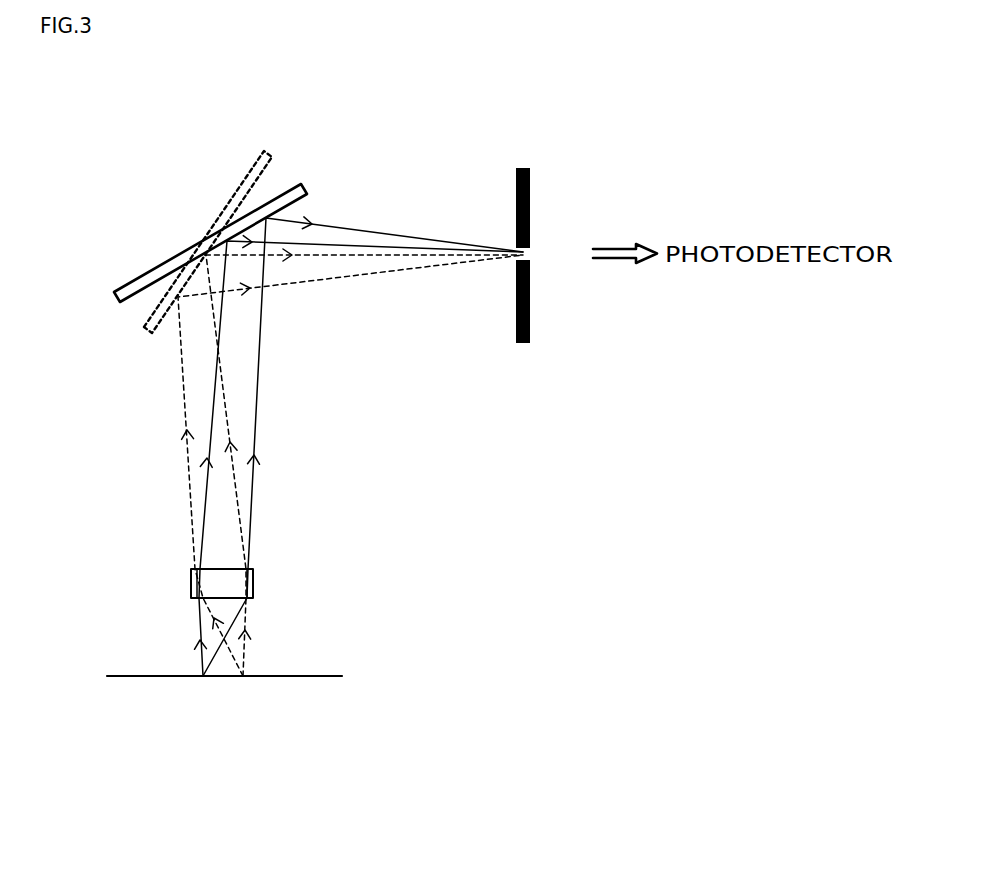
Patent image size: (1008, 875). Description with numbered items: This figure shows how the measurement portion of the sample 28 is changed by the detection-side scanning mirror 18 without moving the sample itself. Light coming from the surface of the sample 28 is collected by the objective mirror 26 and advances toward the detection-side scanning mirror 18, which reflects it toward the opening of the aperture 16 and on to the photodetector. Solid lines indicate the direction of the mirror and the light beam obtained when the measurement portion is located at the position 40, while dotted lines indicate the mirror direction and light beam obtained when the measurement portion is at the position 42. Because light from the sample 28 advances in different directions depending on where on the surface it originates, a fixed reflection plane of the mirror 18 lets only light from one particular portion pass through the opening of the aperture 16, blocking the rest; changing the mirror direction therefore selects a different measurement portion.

The aperture 16 is at (522, 168).
The detection-side scanning mirror 18 is at (304, 194).
The objective mirror 26 is at (254, 585).
The sample 28 is at (333, 676).
The measurement portion position 40 is at (203, 689).
The measurement portion position 42 is at (244, 689).